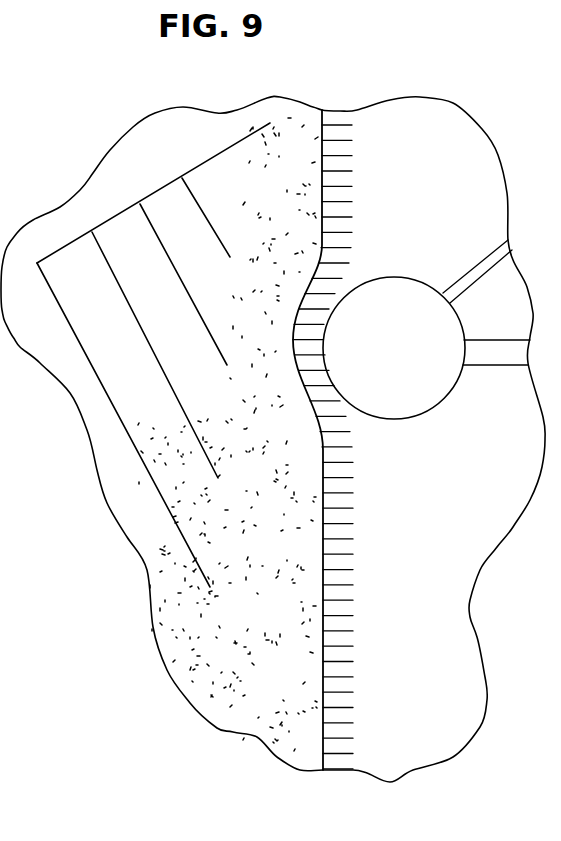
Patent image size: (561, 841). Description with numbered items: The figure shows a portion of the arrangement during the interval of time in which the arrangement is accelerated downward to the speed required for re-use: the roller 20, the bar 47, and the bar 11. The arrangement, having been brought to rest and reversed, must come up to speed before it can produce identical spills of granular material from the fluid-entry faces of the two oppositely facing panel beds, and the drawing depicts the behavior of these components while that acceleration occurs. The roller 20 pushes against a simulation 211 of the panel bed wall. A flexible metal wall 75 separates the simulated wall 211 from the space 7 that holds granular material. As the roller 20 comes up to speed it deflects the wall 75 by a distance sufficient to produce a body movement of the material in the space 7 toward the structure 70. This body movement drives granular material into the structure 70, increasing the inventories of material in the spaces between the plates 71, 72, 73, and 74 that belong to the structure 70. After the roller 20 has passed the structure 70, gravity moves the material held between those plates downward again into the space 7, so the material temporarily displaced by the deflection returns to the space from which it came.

The space 7 is at (273, 203).
The bar 11 is at (470, 270).
The roller 20 is at (424, 418).
The bar 47 is at (492, 370).
The structure 70 is at (168, 185).
The plate 71 is at (201, 210).
The plate 72 is at (158, 253).
The plate 73 is at (111, 284).
The plate 74 is at (68, 330).
The flexible metal wall 75 is at (324, 123).
The simulation of wall 211 is at (363, 157).